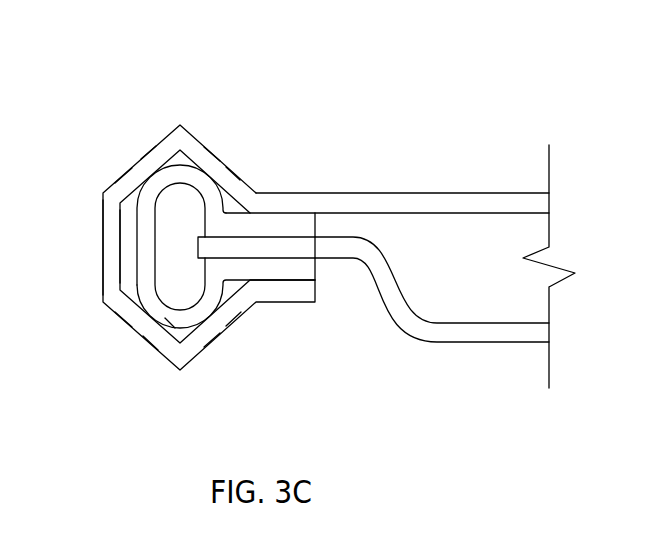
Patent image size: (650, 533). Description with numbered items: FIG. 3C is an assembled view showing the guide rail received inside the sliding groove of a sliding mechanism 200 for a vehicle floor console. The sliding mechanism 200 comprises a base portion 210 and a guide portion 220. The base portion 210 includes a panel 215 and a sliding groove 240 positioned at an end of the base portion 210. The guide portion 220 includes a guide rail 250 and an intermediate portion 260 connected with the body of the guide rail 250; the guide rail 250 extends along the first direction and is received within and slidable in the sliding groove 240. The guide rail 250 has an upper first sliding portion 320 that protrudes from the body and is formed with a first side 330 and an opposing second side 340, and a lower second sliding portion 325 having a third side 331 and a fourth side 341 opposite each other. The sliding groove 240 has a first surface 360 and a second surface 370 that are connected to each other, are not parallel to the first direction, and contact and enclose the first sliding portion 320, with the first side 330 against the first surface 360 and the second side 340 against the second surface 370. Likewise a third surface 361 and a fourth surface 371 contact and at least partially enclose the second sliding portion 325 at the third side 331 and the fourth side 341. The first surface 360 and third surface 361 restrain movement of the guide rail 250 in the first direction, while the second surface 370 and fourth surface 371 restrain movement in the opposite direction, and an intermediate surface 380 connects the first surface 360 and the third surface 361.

The sliding mechanism 200 is at (490, 100).
The base portion 210 is at (342, 185).
The panel 215 is at (407, 197).
The guide portion 220 is at (128, 223).
The sliding groove 240 is at (195, 138).
The guide rail 250 is at (136, 250).
The intermediate portion 260 is at (477, 333).
The first sliding portion 320 is at (168, 172).
The second sliding portion 325 is at (170, 323).
The first side 330 is at (150, 167).
The third side 331 is at (152, 325).
The second side 340 is at (212, 160).
The fourth side 341 is at (208, 323).
The first surface 360 is at (125, 173).
The third surface 361 is at (130, 317).
The second surface 370 is at (232, 180).
The fourth surface 371 is at (230, 315).
The intermediate surface 380 is at (107, 275).